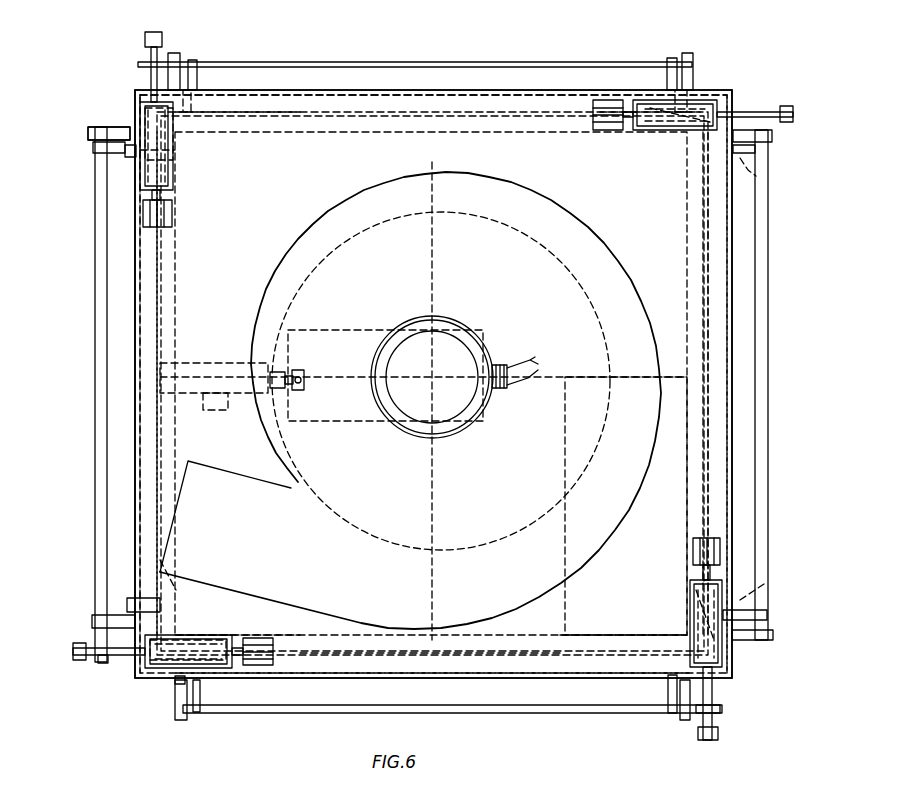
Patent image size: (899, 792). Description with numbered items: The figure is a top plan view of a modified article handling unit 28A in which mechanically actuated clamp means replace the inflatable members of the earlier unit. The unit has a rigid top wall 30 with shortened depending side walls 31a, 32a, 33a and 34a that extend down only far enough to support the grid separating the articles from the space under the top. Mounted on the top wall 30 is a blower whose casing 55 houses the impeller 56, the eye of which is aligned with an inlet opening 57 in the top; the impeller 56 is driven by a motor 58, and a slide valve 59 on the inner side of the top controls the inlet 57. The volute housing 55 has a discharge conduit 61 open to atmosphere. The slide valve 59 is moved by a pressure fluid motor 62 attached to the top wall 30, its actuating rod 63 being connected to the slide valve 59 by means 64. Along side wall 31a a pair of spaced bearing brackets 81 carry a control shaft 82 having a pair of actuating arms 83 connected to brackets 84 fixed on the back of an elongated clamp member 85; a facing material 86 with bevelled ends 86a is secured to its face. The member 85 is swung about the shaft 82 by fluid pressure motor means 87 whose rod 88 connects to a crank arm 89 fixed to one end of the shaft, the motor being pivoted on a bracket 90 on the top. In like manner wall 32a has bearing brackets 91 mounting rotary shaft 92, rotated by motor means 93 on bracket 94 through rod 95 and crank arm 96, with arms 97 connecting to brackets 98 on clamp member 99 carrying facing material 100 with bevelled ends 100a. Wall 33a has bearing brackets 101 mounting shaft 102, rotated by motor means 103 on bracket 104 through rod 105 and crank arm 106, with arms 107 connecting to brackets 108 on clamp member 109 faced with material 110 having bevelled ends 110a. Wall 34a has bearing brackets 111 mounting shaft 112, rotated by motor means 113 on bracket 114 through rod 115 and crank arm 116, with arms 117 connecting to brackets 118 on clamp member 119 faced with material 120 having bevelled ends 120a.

The modified unit 28A is at (780, 252).
The top wall 30 is at (313, 199).
The depending side wall 31a is at (436, 680).
The depending side wall 32a is at (734, 420).
The depending side wall 33a is at (393, 90).
The depending side wall 34a is at (132, 296).
The blower casing 55 is at (590, 240).
The impeller 56 is at (625, 308).
The inlet opening 57 is at (455, 322).
The motor 58 is at (500, 362).
The slide valve 59 is at (334, 326).
The discharge conduit 61 is at (232, 478).
The pressure fluid motor 62 is at (200, 356).
The actuating rod 63 is at (288, 340).
The connecting means 64 is at (306, 360).
The bearing brackets 81 is at (180, 722).
The control shaft 82 is at (553, 714).
The actuating arms 83 is at (200, 706).
The brackets 84 is at (172, 680).
The clamp member 85 is at (366, 656).
The facing material 86 is at (580, 626).
The bevelled ends 86a is at (196, 632).
The fluid pressure motor means 87 is at (690, 596).
The rod 88 is at (714, 698).
The crank arm 89 is at (719, 734).
The bracket 90 is at (692, 552).
The bearing brackets 91 is at (774, 138).
The rotary shaft 92 is at (770, 508).
The motor means 93 is at (650, 132).
The bracket 94 is at (600, 130).
The rod 95 is at (742, 112).
The crank arm 96 is at (794, 114).
The arms 97 is at (758, 160).
The brackets 98 is at (760, 176).
The clamp member 99 is at (709, 364).
The facing material 100 is at (686, 460).
The bevelled ends 100a is at (690, 128).
The bearing brackets 101 is at (175, 52).
The rotary shaft 102 is at (290, 62).
The motor means 103 is at (174, 170).
The bracket 104 is at (174, 216).
The rod 105 is at (152, 82).
The crank arm 106 is at (144, 40).
The arms 107 is at (198, 66).
The brackets 108 is at (200, 94).
The clamp member 109 is at (405, 108).
The facing material 110 is at (318, 134).
The bevelled ends 110a is at (200, 114).
The bearing brackets 111 is at (98, 128).
The rotary shaft 112 is at (96, 462).
The motor means 113 is at (226, 668).
The bracket 114 is at (272, 638).
The rod 115 is at (118, 660).
The crank arm 116 is at (78, 662).
The arms 117 is at (110, 152).
The brackets 118 is at (140, 180).
The clamp member 119 is at (150, 384).
The facing material 120 is at (178, 289).
The bevelled ends 120a is at (176, 146).